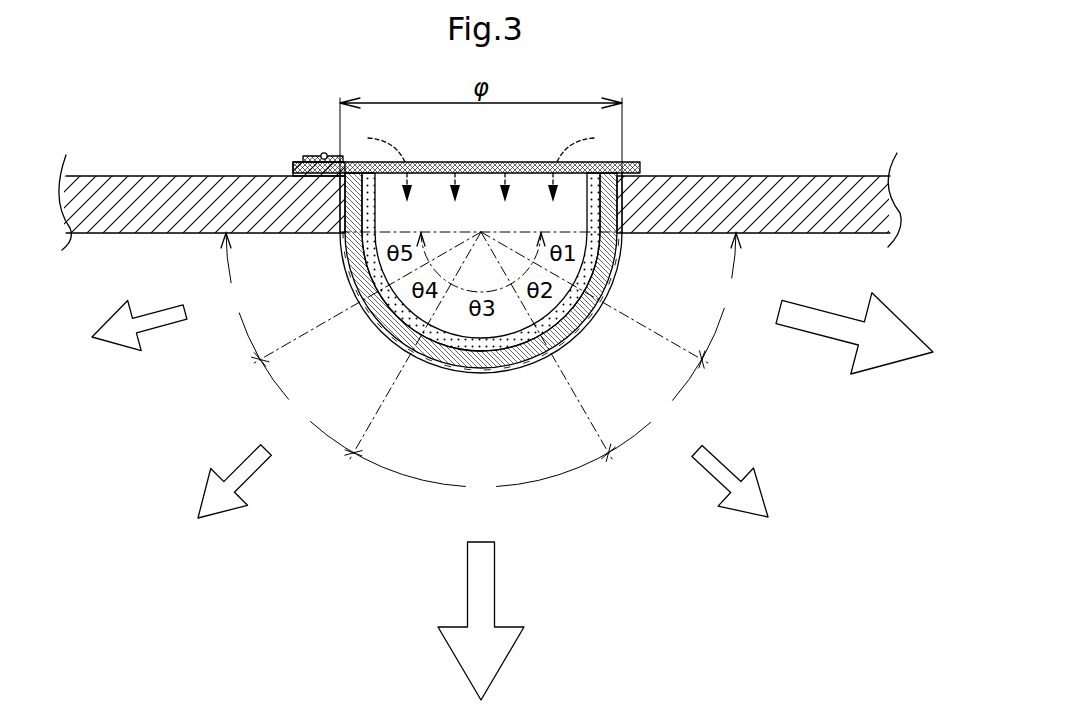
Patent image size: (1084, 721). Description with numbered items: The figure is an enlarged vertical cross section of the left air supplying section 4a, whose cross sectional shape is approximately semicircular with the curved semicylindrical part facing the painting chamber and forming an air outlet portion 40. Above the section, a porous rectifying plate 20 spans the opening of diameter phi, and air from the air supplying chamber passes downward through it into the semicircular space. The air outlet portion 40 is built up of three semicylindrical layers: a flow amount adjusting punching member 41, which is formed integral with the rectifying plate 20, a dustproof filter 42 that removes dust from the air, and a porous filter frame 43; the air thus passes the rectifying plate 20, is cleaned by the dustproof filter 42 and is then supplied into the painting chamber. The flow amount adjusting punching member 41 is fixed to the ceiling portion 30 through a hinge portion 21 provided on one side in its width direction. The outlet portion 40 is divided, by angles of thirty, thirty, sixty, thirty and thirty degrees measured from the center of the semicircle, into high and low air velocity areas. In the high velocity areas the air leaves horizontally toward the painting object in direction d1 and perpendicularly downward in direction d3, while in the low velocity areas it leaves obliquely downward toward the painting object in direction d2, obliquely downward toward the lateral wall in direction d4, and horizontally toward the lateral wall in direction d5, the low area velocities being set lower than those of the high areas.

The rectifying plate 20 is at (633, 160).
The hinge portion 21 is at (308, 156).
The ceiling portion 30 is at (782, 177).
The air outlet portion 40 is at (485, 239).
The flow amount adjusting punching member 41 is at (612, 205).
The dustproof filter 42 is at (594, 258).
The filter frame 43 is at (344, 262).
The air supplying section 4a is at (381, 522).
The horizontal direction on the side of the painting object d1 is at (903, 362).
The obliquely downward direction on the side of the painting object d2 is at (762, 522).
The downward perpendicular direction d3 is at (510, 657).
The obliquely downward direction on the side of the lateral wall d4 is at (217, 519).
The horizontal direction on the side of the lateral wall d5 is at (115, 345).